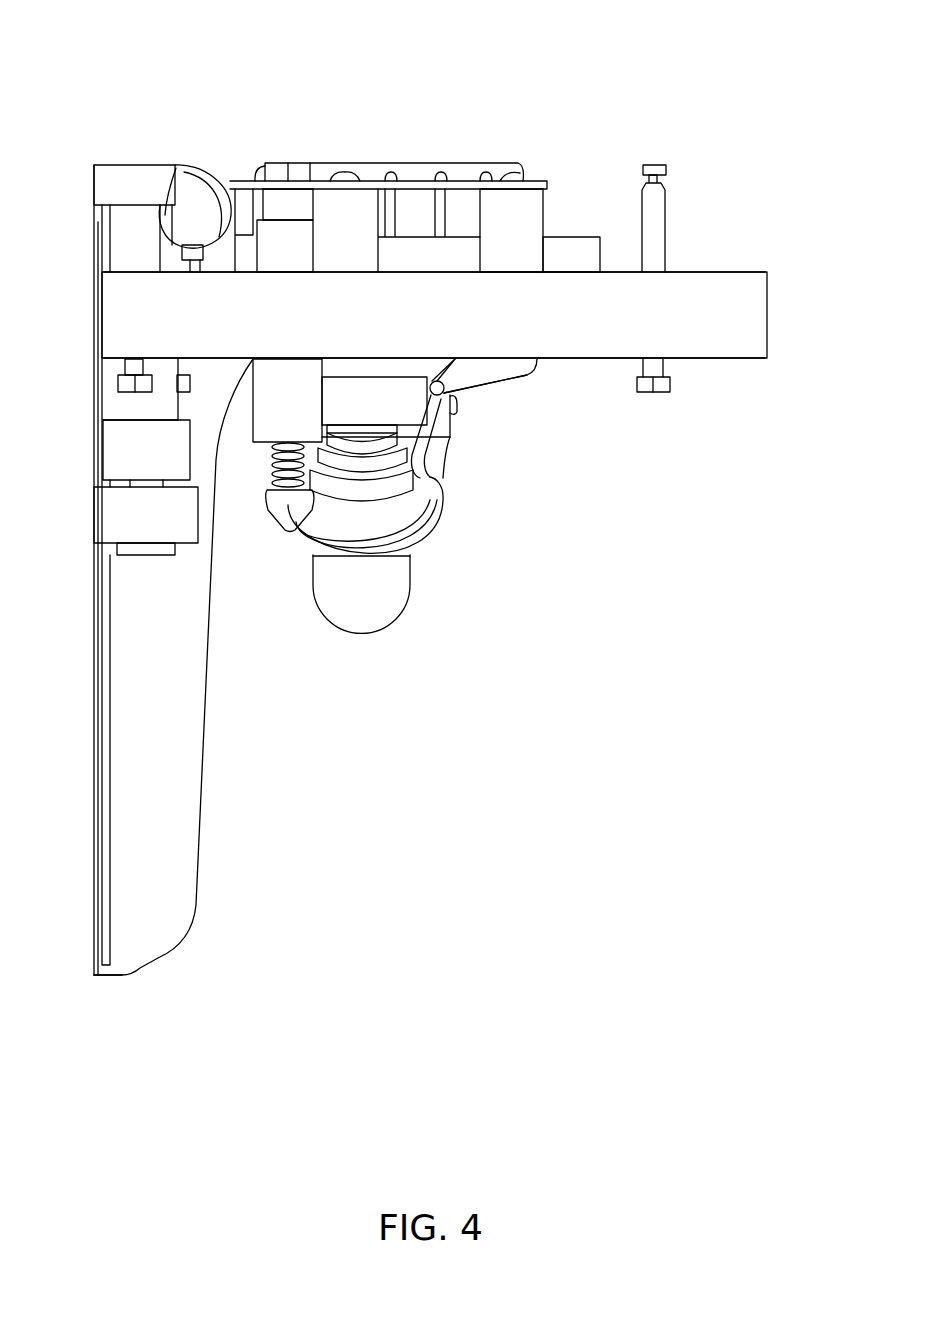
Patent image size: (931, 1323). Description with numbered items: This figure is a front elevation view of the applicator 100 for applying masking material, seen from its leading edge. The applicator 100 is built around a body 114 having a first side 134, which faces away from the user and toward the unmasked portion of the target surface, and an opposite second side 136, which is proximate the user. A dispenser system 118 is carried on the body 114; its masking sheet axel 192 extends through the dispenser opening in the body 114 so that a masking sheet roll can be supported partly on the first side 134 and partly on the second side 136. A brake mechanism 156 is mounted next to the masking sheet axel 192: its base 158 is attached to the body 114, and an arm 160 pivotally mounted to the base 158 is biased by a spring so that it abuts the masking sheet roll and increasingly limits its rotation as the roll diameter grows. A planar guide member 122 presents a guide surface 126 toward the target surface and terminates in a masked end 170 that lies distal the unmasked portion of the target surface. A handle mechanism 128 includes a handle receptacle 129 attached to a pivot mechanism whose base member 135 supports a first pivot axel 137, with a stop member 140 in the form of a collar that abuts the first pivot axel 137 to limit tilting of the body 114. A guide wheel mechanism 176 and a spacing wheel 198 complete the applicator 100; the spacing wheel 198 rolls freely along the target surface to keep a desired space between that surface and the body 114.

The applicator 100 is at (107, 64).
The body 114 is at (752, 316).
The dispenser system 118 is at (485, 138).
The guide member 122 is at (92, 690).
The guide surface 126 is at (92, 620).
The handle mechanism 128 is at (483, 548).
The handle receptacle 129 is at (368, 613).
The first side 134 is at (722, 272).
The base member 135 is at (397, 412).
The second side 136 is at (722, 358).
The first pivot axel 137 is at (458, 410).
The stop member 140 is at (427, 544).
The brake mechanism 156 is at (542, 368).
The base 158 is at (487, 382).
The arm 160 is at (428, 435).
The masked end 170 is at (100, 978).
The guide wheel mechanism 176 is at (208, 143).
The masking sheet axel 192 is at (272, 522).
The spacing wheel 198 is at (98, 176).